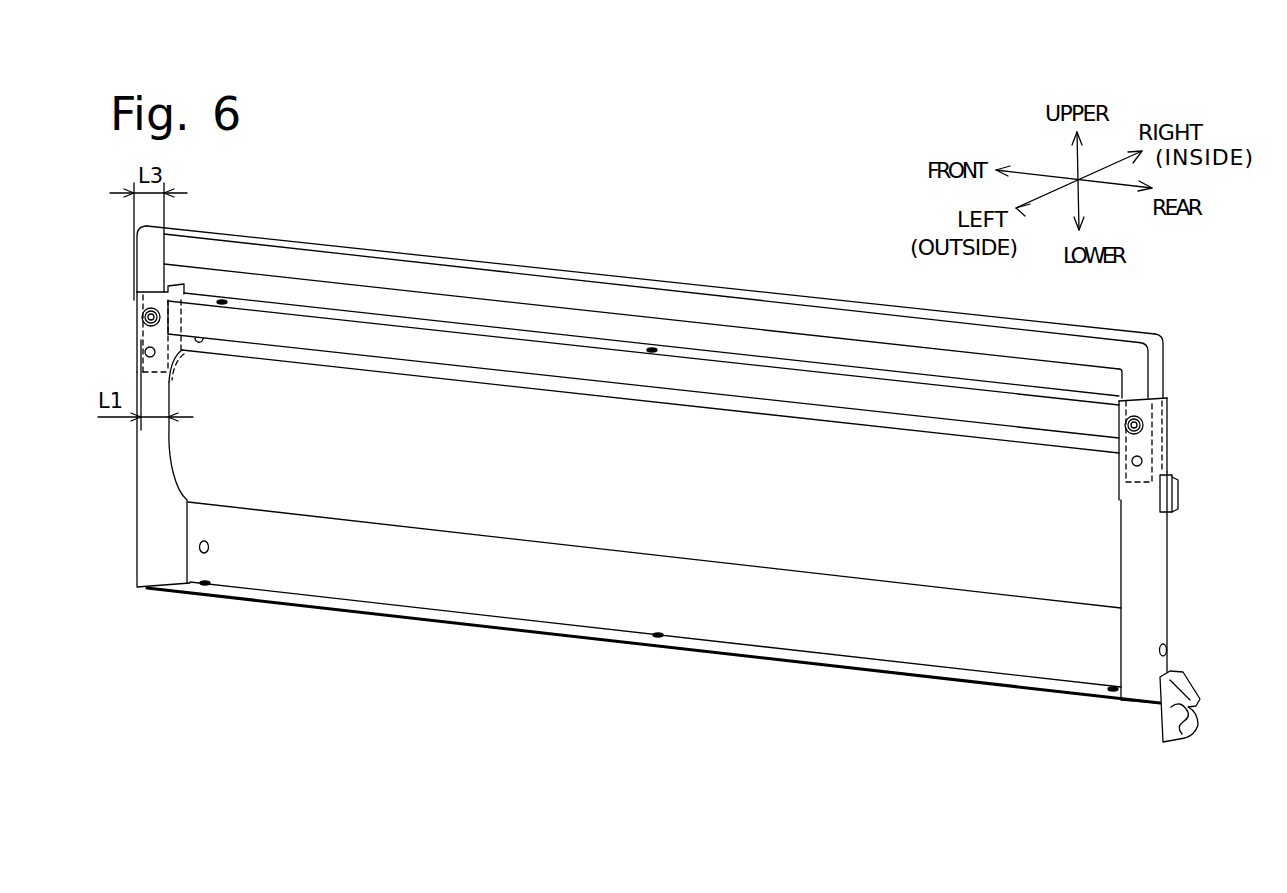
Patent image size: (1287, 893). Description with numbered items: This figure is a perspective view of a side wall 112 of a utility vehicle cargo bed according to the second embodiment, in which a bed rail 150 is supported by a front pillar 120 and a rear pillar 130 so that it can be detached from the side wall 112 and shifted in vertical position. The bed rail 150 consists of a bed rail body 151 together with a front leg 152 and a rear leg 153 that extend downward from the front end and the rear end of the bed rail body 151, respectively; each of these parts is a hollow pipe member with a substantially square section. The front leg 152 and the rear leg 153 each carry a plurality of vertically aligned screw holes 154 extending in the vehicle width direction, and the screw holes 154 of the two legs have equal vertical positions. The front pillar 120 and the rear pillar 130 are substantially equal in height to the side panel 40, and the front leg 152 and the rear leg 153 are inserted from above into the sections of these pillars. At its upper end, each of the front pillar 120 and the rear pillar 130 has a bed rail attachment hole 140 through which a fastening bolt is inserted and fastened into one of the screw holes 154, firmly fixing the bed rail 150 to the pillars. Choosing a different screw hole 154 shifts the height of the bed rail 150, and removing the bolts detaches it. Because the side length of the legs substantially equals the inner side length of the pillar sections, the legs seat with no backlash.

The side panel 40 is at (788, 603).
The side wall 112 is at (743, 257).
The front pillar 120 is at (147, 588).
The rear pillar 130 is at (1167, 606).
The bed rail attachment hole 140 is at (134, 308).
The bed rail 150 is at (585, 268).
The bed rail body 151 is at (478, 278).
The front leg 152 is at (147, 268).
The rear leg 153 is at (1162, 386).
The screw holes 154 is at (171, 379).